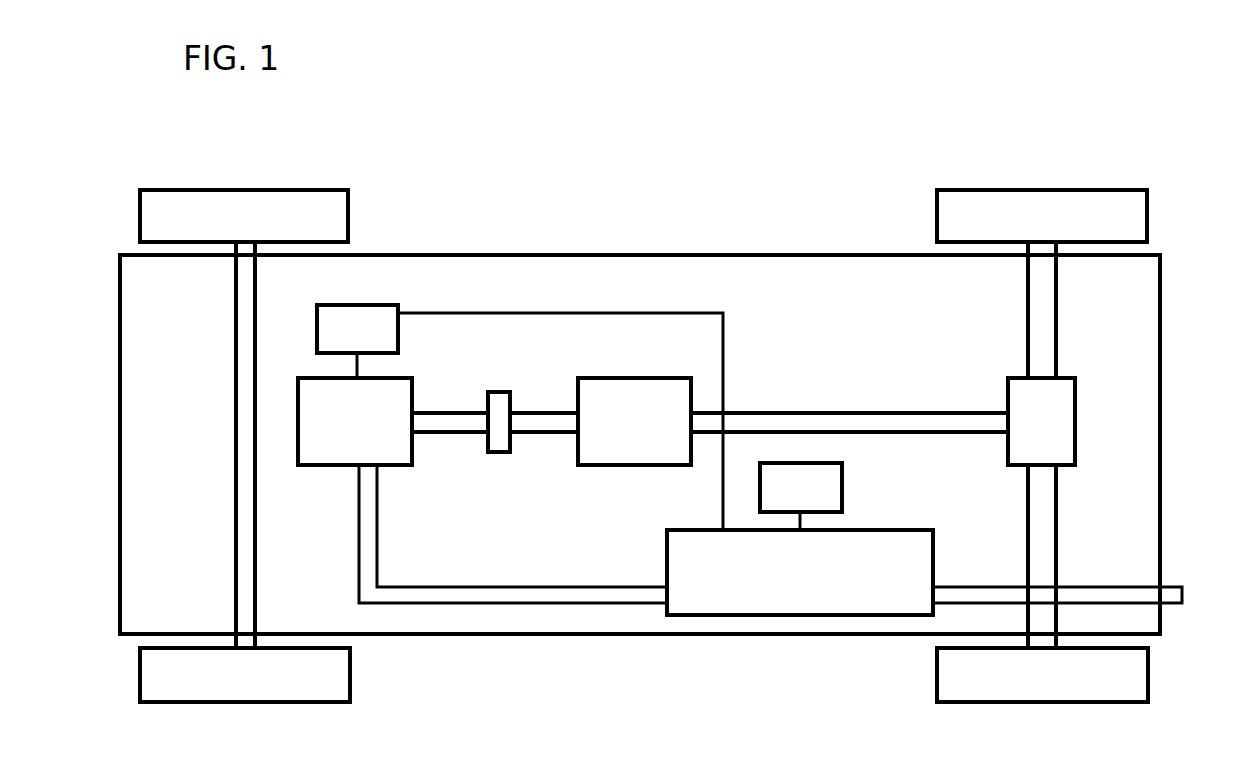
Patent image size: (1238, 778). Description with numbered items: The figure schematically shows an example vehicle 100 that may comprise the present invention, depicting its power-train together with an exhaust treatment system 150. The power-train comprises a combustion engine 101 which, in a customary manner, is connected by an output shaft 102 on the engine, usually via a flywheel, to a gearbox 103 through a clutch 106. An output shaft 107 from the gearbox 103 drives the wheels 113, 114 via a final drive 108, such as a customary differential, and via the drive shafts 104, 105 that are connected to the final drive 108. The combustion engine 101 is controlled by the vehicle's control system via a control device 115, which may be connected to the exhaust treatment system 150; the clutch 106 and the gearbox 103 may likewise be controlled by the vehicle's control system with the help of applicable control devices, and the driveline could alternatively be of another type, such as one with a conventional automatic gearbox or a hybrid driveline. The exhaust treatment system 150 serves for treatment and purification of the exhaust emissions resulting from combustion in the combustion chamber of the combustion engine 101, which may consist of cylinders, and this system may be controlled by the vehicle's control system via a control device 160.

The vehicle 100 is at (550, 103).
The combustion engine 101 is at (330, 452).
The output shaft 102 is at (432, 410).
The gearbox 103 is at (632, 405).
The drive shaft 104 is at (1046, 307).
The drive shaft 105 is at (1050, 563).
The clutch 106 is at (499, 452).
The output shaft 107 is at (935, 432).
The final drive 108 is at (1071, 416).
The wheel 113 is at (1144, 207).
The wheel 114 is at (1141, 675).
The control device 115 is at (358, 338).
The exhaust treatment system 150 is at (815, 612).
The control device 160 is at (803, 495).